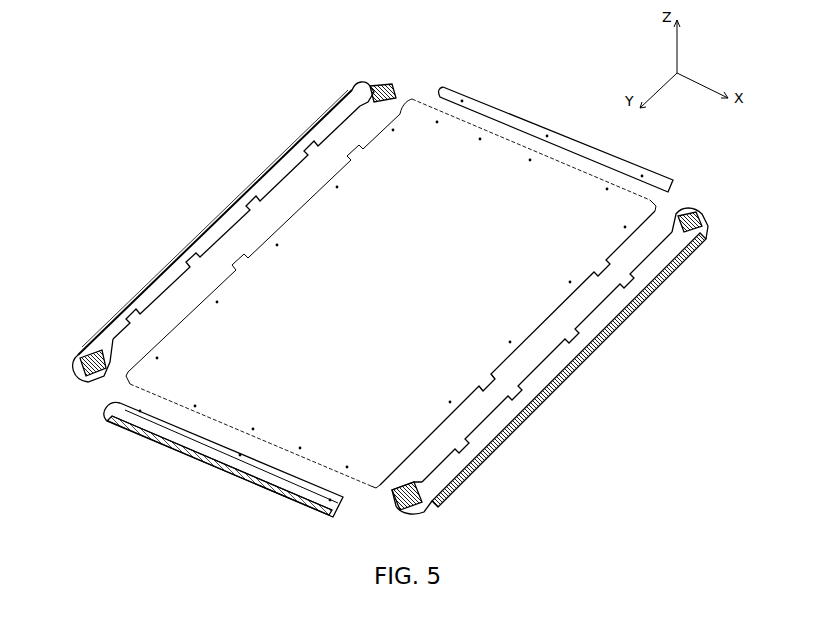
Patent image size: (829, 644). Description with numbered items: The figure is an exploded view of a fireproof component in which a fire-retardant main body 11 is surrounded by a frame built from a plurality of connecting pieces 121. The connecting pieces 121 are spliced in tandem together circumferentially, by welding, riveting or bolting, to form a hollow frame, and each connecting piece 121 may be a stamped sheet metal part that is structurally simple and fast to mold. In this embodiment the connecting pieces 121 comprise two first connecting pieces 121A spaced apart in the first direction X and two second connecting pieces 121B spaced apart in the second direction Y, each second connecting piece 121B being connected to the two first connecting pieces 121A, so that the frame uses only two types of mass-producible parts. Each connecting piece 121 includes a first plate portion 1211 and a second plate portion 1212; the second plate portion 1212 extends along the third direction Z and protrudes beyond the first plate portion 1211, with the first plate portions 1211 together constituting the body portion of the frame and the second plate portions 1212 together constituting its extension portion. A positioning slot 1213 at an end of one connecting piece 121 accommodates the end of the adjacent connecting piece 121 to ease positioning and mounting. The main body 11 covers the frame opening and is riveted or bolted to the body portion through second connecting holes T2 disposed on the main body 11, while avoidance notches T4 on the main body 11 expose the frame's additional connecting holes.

The main body 11 is at (404, 287).
The connecting piece 121 is at (398, 286).
The first connecting piece 121A is at (398, 283).
The second connecting piece 121B is at (545, 108).
The first plate portion 1211 is at (127, 312).
The second plate portion 1212 is at (78, 368).
The positioning slot 1213 is at (382, 88).
The second connecting hole T2 is at (628, 232).
The avoidance notch T4 is at (672, 218).